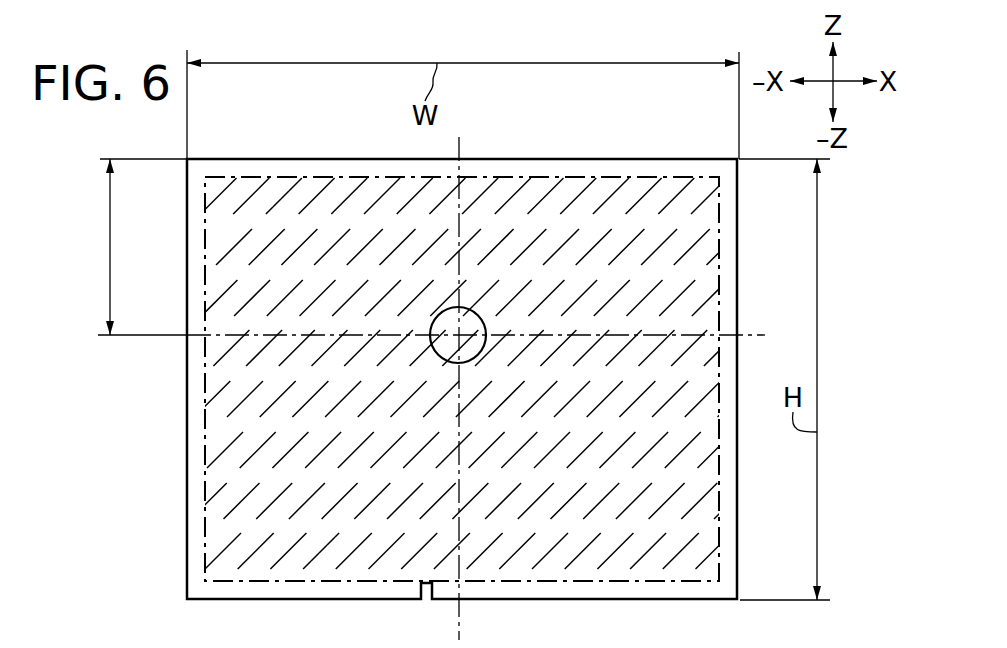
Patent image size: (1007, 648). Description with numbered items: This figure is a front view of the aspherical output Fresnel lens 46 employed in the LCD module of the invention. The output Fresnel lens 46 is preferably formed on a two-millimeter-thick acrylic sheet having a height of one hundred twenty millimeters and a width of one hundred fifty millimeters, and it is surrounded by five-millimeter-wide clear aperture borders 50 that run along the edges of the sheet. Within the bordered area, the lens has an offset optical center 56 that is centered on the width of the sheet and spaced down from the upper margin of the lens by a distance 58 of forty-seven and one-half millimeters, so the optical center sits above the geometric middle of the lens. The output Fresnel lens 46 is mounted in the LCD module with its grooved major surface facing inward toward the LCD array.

The output Fresnel lens 46 is at (145, 467).
The clear aperture borders 50 is at (277, 167).
The offset optical center 56 is at (459, 334).
The distance 58 is at (110, 240).